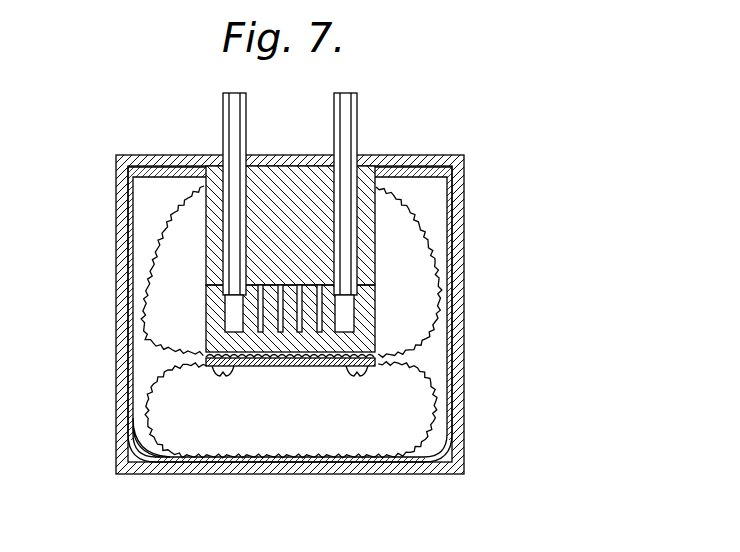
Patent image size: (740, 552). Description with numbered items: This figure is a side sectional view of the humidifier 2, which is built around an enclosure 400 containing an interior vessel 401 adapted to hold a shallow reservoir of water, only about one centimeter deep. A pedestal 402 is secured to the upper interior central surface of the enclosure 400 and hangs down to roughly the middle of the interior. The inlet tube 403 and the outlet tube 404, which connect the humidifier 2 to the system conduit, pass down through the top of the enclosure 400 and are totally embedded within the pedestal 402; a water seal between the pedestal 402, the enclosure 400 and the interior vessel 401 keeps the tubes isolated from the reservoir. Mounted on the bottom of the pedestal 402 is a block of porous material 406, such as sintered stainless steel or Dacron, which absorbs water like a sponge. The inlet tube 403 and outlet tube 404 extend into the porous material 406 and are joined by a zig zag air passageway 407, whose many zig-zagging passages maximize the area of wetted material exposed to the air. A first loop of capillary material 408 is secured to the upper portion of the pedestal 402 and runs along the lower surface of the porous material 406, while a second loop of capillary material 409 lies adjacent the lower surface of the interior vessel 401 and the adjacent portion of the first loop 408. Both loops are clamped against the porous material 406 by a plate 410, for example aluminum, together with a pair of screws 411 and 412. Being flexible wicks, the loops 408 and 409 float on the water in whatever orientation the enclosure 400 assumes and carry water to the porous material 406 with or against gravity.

The enclosure 400 is at (117, 184).
The interior vessel 401 is at (129, 221).
The pedestal 402 is at (296, 175).
The inlet tube 403 is at (223, 118).
The outlet tube 404 is at (357, 132).
The block of porous material 406 is at (376, 306).
The zig zag air passageway 407 is at (260, 333).
The first loop of capillary material 408 is at (148, 259).
The second loop of capillary material 409 is at (137, 420).
The plate 410 is at (336, 367).
The screw 411 is at (218, 373).
The screw 412 is at (364, 373).
The humidifier 2 is at (90, 321).